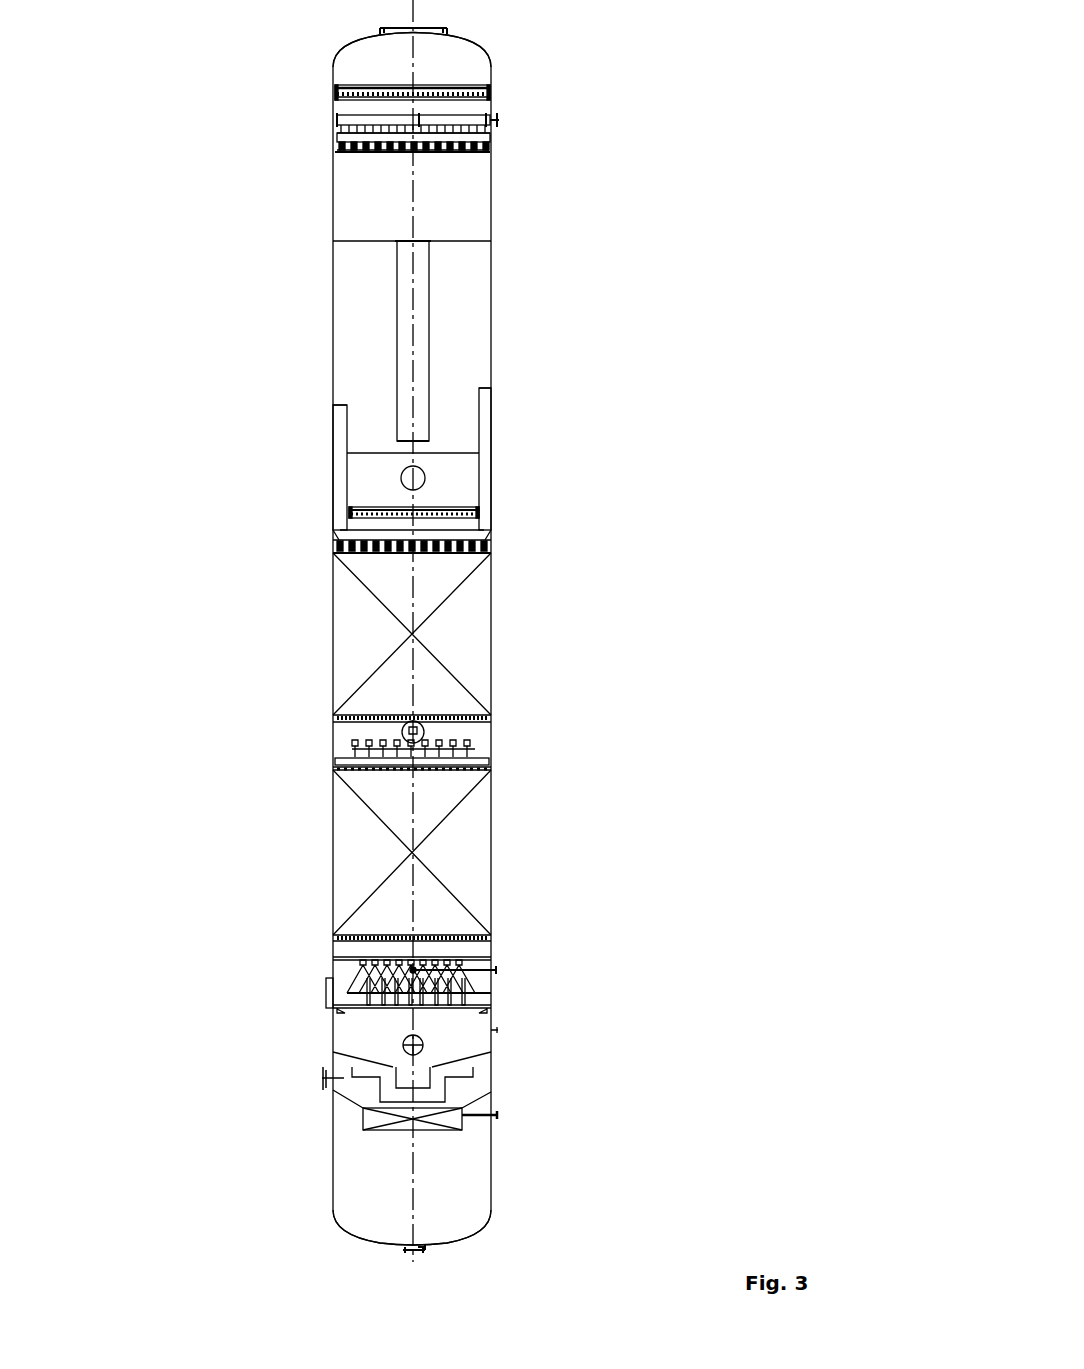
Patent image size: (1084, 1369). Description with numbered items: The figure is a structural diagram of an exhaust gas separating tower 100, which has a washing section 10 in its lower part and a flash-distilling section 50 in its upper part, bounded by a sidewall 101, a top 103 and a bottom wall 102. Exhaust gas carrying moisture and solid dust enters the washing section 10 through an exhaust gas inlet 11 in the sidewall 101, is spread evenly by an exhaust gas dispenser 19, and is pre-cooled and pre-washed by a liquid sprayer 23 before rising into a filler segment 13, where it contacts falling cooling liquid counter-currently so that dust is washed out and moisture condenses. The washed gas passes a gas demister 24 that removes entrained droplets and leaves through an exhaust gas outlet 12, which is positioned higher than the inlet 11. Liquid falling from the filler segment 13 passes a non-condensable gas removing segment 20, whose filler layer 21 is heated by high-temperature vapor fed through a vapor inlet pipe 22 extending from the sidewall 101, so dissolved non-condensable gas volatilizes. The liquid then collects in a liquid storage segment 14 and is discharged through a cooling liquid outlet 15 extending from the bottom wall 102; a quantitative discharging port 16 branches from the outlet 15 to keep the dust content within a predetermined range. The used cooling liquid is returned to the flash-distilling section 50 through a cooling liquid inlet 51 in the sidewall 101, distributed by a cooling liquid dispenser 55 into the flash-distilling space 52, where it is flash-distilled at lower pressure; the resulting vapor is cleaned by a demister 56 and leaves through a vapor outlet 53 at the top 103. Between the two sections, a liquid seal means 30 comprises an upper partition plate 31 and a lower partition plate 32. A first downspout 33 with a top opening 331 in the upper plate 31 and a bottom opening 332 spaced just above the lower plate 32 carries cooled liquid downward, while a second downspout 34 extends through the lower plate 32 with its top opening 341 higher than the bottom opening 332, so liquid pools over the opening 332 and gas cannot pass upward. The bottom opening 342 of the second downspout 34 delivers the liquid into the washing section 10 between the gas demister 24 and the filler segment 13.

The exhaust gas separating tower 100 is at (218, 83).
The washing section 10 is at (563, 808).
The top of the tower 103 is at (358, 47).
The bottom wall of the tower 102 is at (360, 1237).
The vapor outlet 53 is at (425, 30).
The demister 56 is at (447, 85).
The cooling liquid inlet 51 is at (502, 120).
The flash-distilling section 50 is at (556, 149).
The cooling liquid dispenser 55 is at (452, 152).
The flash-distilling space 52 is at (343, 180).
The upper partition plate 31 is at (357, 241).
The top opening of the first downspout 331 is at (418, 241).
The first downspout 33 is at (420, 327).
The liquid seal means 30 is at (590, 367).
The top opening of the second downspout 341 is at (340, 404).
The lower partition plate 32 is at (371, 453).
The second downspout 34 is at (340, 460).
The exhaust gas outlet 12 is at (401, 478).
The bottom opening of the first downspout 332 is at (421, 442).
The gas demister 24 is at (465, 507).
The bottom opening of the second downspout 342 is at (337, 553).
The filler segment 13 is at (310, 696).
The sidewall of the tower 101 is at (491, 738).
The liquid sprayer 23 is at (472, 958).
The exhaust gas dispenser 19 is at (345, 983).
The exhaust gas inlet 11 is at (326, 1070).
The vapor inlet pipe 22 is at (499, 1115).
The non-condensable gas removing segment 20 is at (352, 1126).
The filler layer 21 is at (445, 1131).
The liquid storage segment 14 is at (345, 1188).
The quantitative discharging port 16 is at (428, 1248).
The cooling liquid outlet 15 is at (417, 1253).